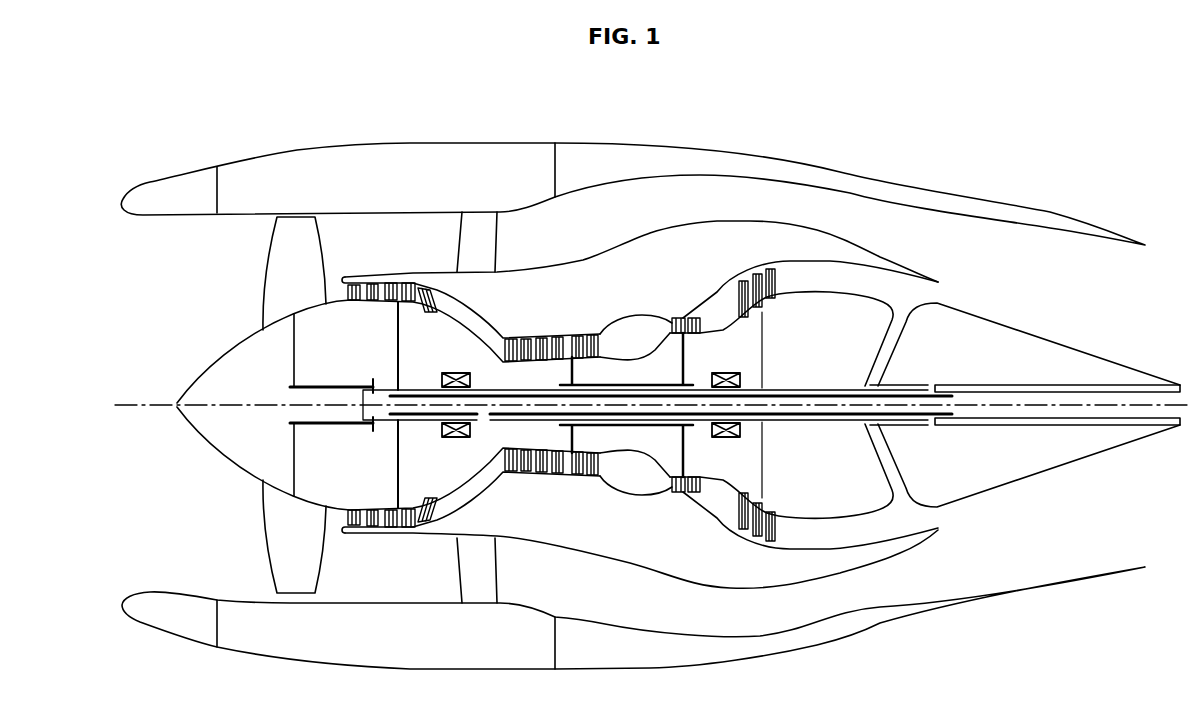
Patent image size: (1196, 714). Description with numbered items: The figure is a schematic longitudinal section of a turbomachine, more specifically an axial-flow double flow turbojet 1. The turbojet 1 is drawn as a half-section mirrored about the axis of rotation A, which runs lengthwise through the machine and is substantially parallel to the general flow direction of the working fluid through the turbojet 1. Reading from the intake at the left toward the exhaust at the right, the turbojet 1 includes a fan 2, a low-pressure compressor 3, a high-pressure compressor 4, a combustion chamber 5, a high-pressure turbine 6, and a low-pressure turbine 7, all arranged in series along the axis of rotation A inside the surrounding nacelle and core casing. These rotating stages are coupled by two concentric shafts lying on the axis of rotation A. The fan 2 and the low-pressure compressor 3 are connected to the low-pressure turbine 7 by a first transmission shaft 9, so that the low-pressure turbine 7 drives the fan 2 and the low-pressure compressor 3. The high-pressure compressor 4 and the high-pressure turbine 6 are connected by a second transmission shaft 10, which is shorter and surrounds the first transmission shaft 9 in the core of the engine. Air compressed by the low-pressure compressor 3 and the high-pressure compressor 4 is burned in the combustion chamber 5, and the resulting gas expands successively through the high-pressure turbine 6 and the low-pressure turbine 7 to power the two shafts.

The turbojet 1 is at (934, 77).
The fan 2 is at (260, 268).
The low-pressure compressor 3 is at (408, 276).
The high-pressure compressor 4 is at (557, 328).
The combustion chamber 5 is at (632, 310).
The high-pressure turbine 6 is at (680, 310).
The low-pressure turbine 7 is at (756, 263).
The first transmission shaft 9 is at (819, 418).
The second transmission shaft 10 is at (632, 383).
The axis of rotation A is at (150, 403).